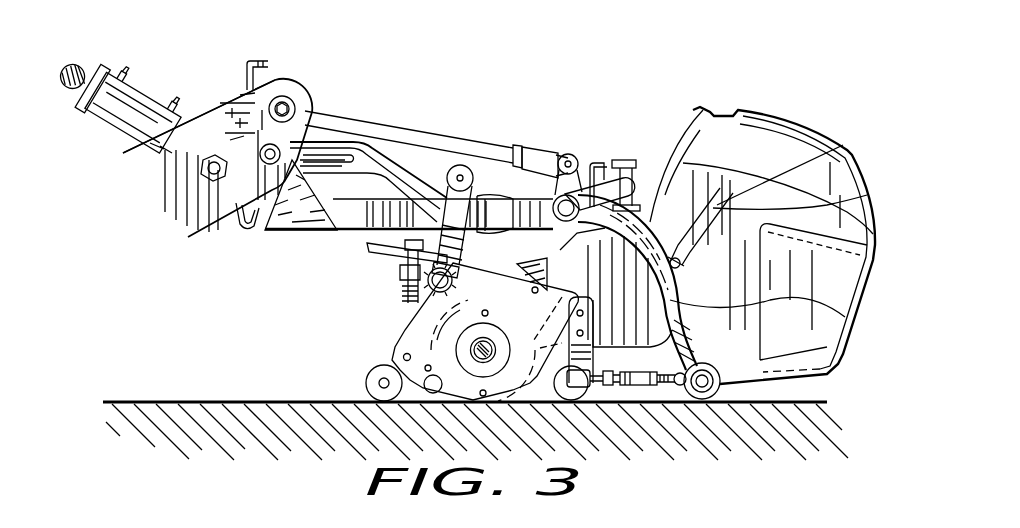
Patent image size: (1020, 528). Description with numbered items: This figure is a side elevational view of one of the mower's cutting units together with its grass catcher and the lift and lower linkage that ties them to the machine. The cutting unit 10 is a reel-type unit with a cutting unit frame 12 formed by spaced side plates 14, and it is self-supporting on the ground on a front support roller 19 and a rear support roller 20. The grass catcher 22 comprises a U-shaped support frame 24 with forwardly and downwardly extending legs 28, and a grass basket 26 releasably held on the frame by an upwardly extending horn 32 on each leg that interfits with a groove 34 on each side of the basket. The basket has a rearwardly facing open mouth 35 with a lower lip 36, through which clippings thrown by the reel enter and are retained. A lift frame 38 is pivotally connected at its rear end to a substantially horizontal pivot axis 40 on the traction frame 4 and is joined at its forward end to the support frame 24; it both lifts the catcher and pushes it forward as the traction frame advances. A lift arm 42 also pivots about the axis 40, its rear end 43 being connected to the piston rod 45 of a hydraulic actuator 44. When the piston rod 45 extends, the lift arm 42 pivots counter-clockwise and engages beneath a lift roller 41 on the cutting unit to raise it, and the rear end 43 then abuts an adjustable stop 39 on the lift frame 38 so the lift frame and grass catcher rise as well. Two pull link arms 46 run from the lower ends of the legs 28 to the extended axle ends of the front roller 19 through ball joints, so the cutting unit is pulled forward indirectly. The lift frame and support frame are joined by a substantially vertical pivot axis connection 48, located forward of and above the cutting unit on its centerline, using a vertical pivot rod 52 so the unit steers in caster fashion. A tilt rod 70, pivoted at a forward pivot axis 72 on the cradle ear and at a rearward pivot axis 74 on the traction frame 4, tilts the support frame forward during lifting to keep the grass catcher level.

The traction frame 4 is at (201, 124).
The cutting unit 10 is at (405, 318).
The cutting unit frame 12 is at (427, 287).
The side plates 14 is at (395, 347).
The front support roller 19 is at (597, 367).
The rear support roller 20 is at (365, 381).
The grass catcher 22 is at (784, 116).
The support frame 24 is at (693, 108).
The grass basket 26 is at (820, 133).
The legs 28 is at (848, 316).
The horn 32 is at (845, 142).
The groove 34 is at (867, 196).
The mouth 35 is at (567, 245).
The lower lip 36 is at (568, 323).
The lift frame 38 is at (353, 228).
The stop 39 is at (272, 236).
The pivot axis 40 is at (200, 230).
The lift roller 41 is at (466, 166).
The lift arm 42 is at (347, 117).
The rear end of lift arm 43 is at (238, 225).
The hydraulic actuator 44 is at (140, 92).
The piston rod 45 is at (157, 177).
The pull link arms 46 is at (645, 392).
The pivot axis connection 48 is at (608, 156).
The pivot rod 52 is at (627, 155).
The tilt rod 70 is at (403, 128).
The pivot axis 72 is at (568, 153).
The pivot axis 74 is at (283, 96).